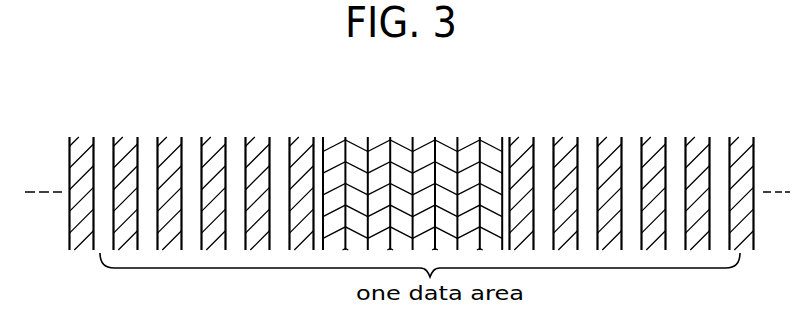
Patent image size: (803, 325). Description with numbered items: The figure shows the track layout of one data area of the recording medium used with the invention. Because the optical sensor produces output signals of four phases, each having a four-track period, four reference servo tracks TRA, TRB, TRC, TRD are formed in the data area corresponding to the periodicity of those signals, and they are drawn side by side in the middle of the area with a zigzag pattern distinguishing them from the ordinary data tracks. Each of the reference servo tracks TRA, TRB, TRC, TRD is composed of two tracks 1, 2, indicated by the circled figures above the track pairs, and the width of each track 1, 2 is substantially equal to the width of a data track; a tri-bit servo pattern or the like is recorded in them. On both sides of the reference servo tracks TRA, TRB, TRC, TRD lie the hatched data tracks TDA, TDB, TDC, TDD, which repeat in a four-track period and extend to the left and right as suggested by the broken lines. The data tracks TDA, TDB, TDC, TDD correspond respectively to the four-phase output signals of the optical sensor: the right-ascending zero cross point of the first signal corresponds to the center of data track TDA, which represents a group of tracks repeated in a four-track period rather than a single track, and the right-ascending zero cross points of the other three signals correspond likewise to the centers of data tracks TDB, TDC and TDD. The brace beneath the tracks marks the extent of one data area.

The data track TDA is at (170, 136).
The data track TDB is at (214, 136).
The data track TDC is at (82, 136).
The data track TDD is at (126, 136).
The reference servo track TRA is at (327, 115).
The reference servo track TRB is at (372, 115).
The reference servo track TRC is at (417, 115).
The reference servo track TRD is at (461, 115).
The track 1 is at (399, 186).
The track 2 is at (423, 186).